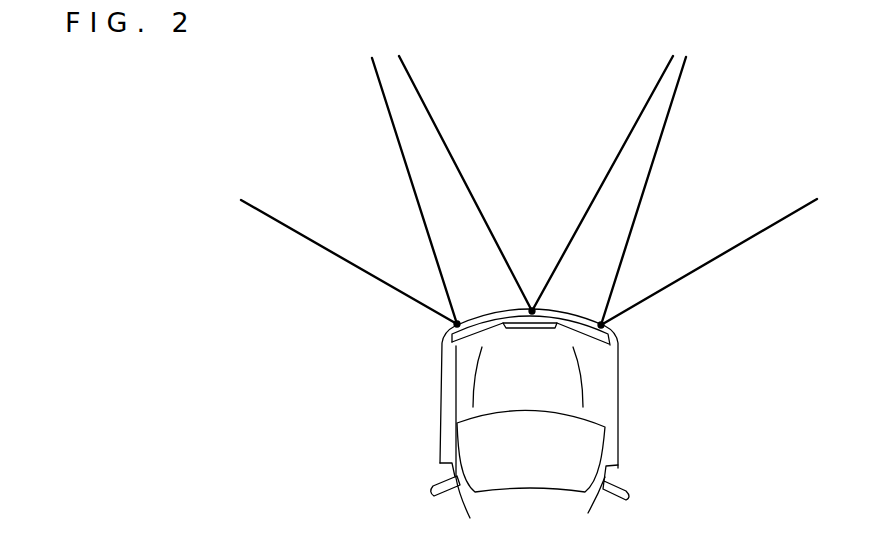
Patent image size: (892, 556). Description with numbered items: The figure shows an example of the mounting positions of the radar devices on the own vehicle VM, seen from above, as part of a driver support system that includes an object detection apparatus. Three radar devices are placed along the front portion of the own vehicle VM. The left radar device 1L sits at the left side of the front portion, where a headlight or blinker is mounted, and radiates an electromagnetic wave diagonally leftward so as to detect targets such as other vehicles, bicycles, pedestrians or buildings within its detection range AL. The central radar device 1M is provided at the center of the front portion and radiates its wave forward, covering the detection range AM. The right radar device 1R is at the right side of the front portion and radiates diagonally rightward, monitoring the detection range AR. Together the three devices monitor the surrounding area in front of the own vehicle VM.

The left radar device 1L is at (457, 324).
The central radar device 1M is at (533, 313).
The right radar device 1R is at (602, 323).
The own vehicle VM is at (617, 467).
The detection range of the left radar device AL is at (349, 191).
The detection range of the central radar device AM is at (536, 183).
The detection range of the right radar device AR is at (709, 191).